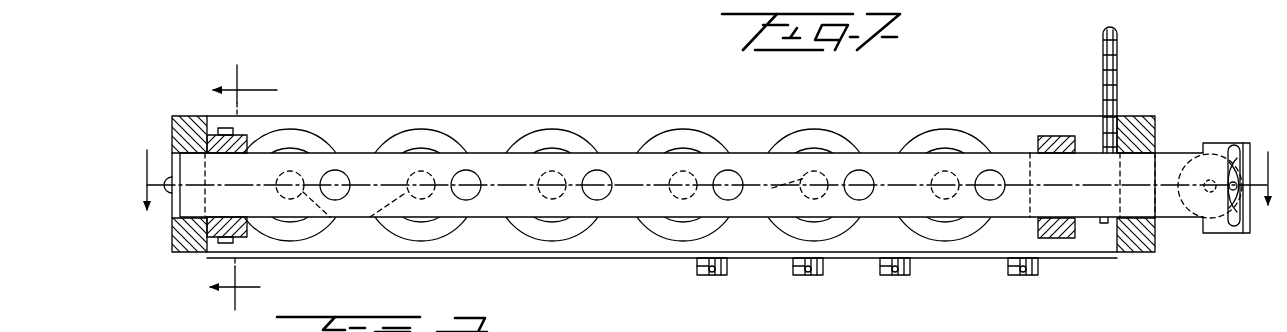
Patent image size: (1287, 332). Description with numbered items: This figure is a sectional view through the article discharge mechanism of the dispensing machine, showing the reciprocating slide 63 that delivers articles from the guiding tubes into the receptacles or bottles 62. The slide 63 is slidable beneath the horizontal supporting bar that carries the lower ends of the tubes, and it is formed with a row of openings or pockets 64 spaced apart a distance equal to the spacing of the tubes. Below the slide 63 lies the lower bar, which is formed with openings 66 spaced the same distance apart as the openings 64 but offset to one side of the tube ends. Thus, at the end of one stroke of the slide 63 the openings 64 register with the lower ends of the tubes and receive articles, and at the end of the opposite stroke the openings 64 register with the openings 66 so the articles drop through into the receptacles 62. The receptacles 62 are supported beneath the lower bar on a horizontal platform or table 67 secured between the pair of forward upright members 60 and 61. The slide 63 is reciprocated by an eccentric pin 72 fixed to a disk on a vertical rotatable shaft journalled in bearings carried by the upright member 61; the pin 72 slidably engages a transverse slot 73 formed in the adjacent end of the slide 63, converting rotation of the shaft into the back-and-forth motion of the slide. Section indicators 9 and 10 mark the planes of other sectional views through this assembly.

The section line 9- 9 is at (707, 169).
The section line 10- 10 is at (256, 187).
The forward upright member 60 is at (180, 256).
The forward upright member 61 is at (1157, 128).
The receptacles or bottles 62 is at (412, 137).
The reciprocating slide 63 is at (1180, 215).
The openings or pockets 64 is at (466, 178).
The openings 66 is at (335, 220).
The horizontal platform or table 67 is at (602, 243).
The eccentric pin 72 is at (1247, 197).
The transverse slot 73 is at (1236, 145).